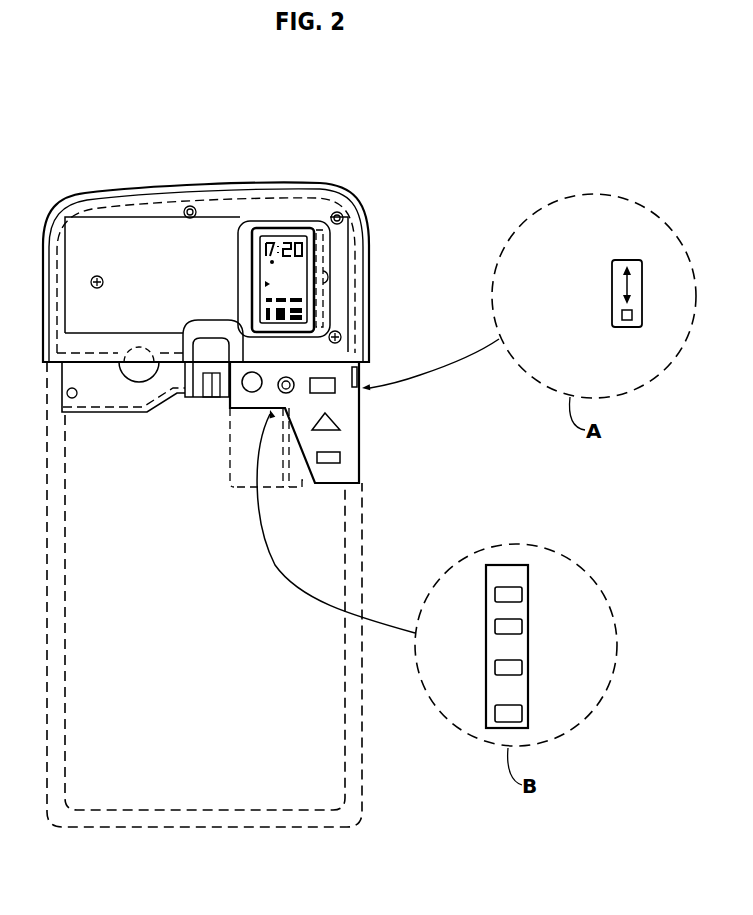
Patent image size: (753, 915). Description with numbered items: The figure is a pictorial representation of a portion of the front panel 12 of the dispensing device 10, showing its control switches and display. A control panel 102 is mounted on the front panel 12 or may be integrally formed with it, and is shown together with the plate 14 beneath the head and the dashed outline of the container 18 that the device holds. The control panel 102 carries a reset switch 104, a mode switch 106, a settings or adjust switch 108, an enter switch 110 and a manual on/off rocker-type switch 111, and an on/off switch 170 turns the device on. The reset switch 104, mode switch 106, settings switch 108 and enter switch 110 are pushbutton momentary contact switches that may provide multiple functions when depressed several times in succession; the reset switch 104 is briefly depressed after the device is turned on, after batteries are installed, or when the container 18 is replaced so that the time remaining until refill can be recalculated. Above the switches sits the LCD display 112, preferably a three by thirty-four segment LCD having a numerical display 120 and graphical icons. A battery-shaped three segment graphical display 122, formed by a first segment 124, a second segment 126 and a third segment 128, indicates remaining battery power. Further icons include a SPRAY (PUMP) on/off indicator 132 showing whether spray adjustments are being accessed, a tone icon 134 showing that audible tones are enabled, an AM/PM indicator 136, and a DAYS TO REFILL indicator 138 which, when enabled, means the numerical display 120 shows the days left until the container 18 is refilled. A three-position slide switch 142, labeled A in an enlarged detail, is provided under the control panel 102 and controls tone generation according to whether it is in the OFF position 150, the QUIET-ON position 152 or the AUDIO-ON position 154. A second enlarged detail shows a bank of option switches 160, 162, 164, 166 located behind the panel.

The dispensing device 10 is at (348, 85).
The front panel 12 is at (140, 217).
The mounting plate 14 is at (46, 384).
The container 18 is at (67, 589).
The control panel 102 is at (293, 442).
The reset switch 104 is at (243, 387).
The mode switch 106 is at (333, 381).
The settings switch 108 is at (340, 421).
The enter switch 110 is at (340, 457).
The manual on/off rocker-type switch 111 is at (268, 467).
The LCD display 112 is at (342, 210).
The numerical display 120 is at (300, 226).
The three segment LCD graphical display 122 is at (283, 240).
The first segment 124 is at (270, 240).
The second segment 126 is at (294, 240).
The third segment 128 is at (309, 247).
The SPRAY (PUMP) on/off indicator 132 is at (266, 318).
The tone icon 134 is at (268, 260).
The AM/PM indicator 136 is at (308, 258).
The DAYS TO REFILL indicator 138 is at (266, 300).
The three-position slide switch 142 is at (633, 328).
The OFF position 150 is at (570, 319).
The QUIET-ON position 152 is at (530, 298).
The AUDIO-ON position 154 is at (522, 266).
The option switch 1 160 is at (522, 595).
The option switch 2 162 is at (522, 628).
The option switch 3 164 is at (522, 668).
The option switch 4 166 is at (513, 713).
The on/off switch 170 is at (80, 218).